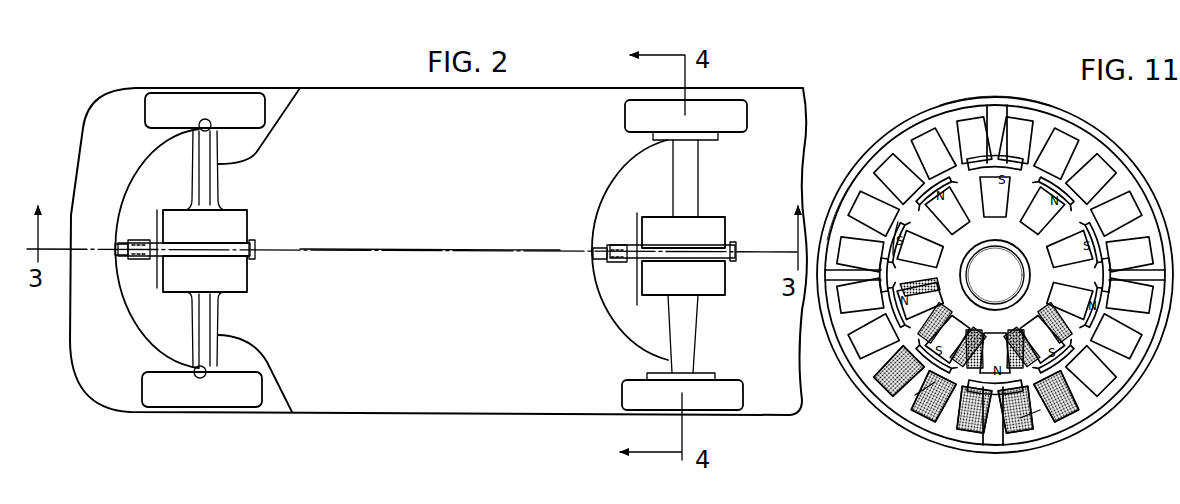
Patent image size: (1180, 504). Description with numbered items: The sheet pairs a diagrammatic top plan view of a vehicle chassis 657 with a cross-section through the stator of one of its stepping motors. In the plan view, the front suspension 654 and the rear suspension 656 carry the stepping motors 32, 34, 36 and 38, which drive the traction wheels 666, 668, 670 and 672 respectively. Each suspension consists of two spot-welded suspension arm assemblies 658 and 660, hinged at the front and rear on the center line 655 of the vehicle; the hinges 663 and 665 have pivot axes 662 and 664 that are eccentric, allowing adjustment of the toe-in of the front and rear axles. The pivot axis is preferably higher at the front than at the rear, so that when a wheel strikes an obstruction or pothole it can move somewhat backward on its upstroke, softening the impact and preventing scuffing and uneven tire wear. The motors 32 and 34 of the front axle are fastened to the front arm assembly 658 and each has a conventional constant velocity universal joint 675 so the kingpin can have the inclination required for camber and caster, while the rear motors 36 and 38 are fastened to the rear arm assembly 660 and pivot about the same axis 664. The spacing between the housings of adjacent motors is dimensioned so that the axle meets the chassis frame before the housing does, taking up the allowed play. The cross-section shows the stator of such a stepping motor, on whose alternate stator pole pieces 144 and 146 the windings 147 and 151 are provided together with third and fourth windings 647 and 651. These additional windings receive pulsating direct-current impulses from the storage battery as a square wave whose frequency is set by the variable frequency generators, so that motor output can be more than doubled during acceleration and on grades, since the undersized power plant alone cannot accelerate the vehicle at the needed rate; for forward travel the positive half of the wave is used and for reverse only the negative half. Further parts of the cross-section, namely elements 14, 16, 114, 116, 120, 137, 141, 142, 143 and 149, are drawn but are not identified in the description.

In FIG. 11, the motor housing 14 is at (1096, 120).
In FIG. 11, the shaft 16 is at (1001, 293).
In FIG. 2, the stepping motor 32 is at (248, 229).
In FIG. 2, the stepping motor 34 is at (250, 284).
In FIG. 2, the stepping motor 36 is at (726, 220).
In FIG. 2, the stepping motor 38 is at (726, 283).
In FIG. 11, the stator yoke 114 is at (1042, 112).
In FIG. 11, the stator core 116 is at (880, 131).
In FIG. 11, the hub 120 is at (995, 275).
In FIG. 11, the pole shoe 137 is at (905, 255).
In FIG. 11, the magnet 141 is at (925, 310).
In FIG. 11, the rotor pole 142 is at (1003, 212).
In FIG. 11, the magnet 143 is at (900, 390).
In FIG. 11, the stator pole piece 144 is at (958, 112).
In FIG. 11, the stator pole piece 146 is at (950, 128).
In FIG. 11, the winding 147 is at (885, 372).
In FIG. 11, the rotor spoke 149 is at (995, 275).
In FIG. 11, the winding 151 is at (960, 400).
In FIG. 11, the third winding 647 is at (830, 395).
In FIG. 11, the fourth winding 651 is at (930, 400).
In FIG. 2, the front suspension 654 is at (258, 250).
In FIG. 2, the center line 655 is at (430, 249).
In FIG. 2, the rear suspension 656 is at (733, 250).
In FIG. 2, the vehicle chassis 657 is at (84, 121).
In FIG. 2, the front suspension arm assembly 658 is at (224, 188).
In FIG. 2, the rear suspension arm assembly 660 is at (670, 168).
In FIG. 2, the front pivot axis 662 is at (178, 252).
In FIG. 2, the front hinge 663 is at (135, 262).
In FIG. 2, the rear pivot axis 664 is at (665, 253).
In FIG. 2, the rear hinge 665 is at (620, 263).
In FIG. 2, the traction wheel 666 is at (162, 105).
In FIG. 2, the traction wheel 668 is at (175, 400).
In FIG. 2, the traction wheel 670 is at (748, 118).
In FIG. 2, the traction wheel 672 is at (735, 386).
In FIG. 2, the constant velocity universal joint 675 is at (215, 113).